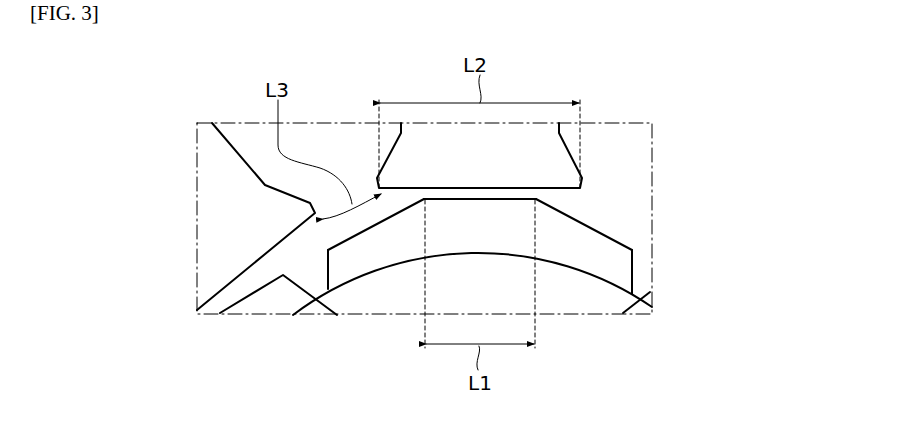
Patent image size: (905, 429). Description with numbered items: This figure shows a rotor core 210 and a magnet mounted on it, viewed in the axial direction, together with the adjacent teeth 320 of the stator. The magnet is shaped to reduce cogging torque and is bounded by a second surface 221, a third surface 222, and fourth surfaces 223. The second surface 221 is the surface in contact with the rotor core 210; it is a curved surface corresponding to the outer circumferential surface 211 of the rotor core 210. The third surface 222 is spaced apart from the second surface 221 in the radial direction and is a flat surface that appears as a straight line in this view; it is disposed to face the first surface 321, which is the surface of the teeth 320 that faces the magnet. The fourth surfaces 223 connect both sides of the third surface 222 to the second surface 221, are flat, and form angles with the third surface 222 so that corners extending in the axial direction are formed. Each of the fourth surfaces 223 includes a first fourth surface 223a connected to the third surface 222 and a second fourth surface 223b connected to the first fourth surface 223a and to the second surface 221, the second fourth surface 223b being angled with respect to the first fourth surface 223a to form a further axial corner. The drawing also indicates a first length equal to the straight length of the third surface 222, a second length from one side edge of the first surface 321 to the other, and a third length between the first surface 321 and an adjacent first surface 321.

The rotor core 210 is at (385, 293).
The outer circumferential surface 211 is at (573, 270).
The second surface 221 is at (431, 210).
The third surface 222 is at (442, 197).
The fourth surfaces 223 is at (112, 245).
The first fourth surface 223a is at (340, 243).
The second fourth surface 223b is at (328, 285).
The teeth 320 is at (650, 202).
The first surface 321 is at (322, 220).